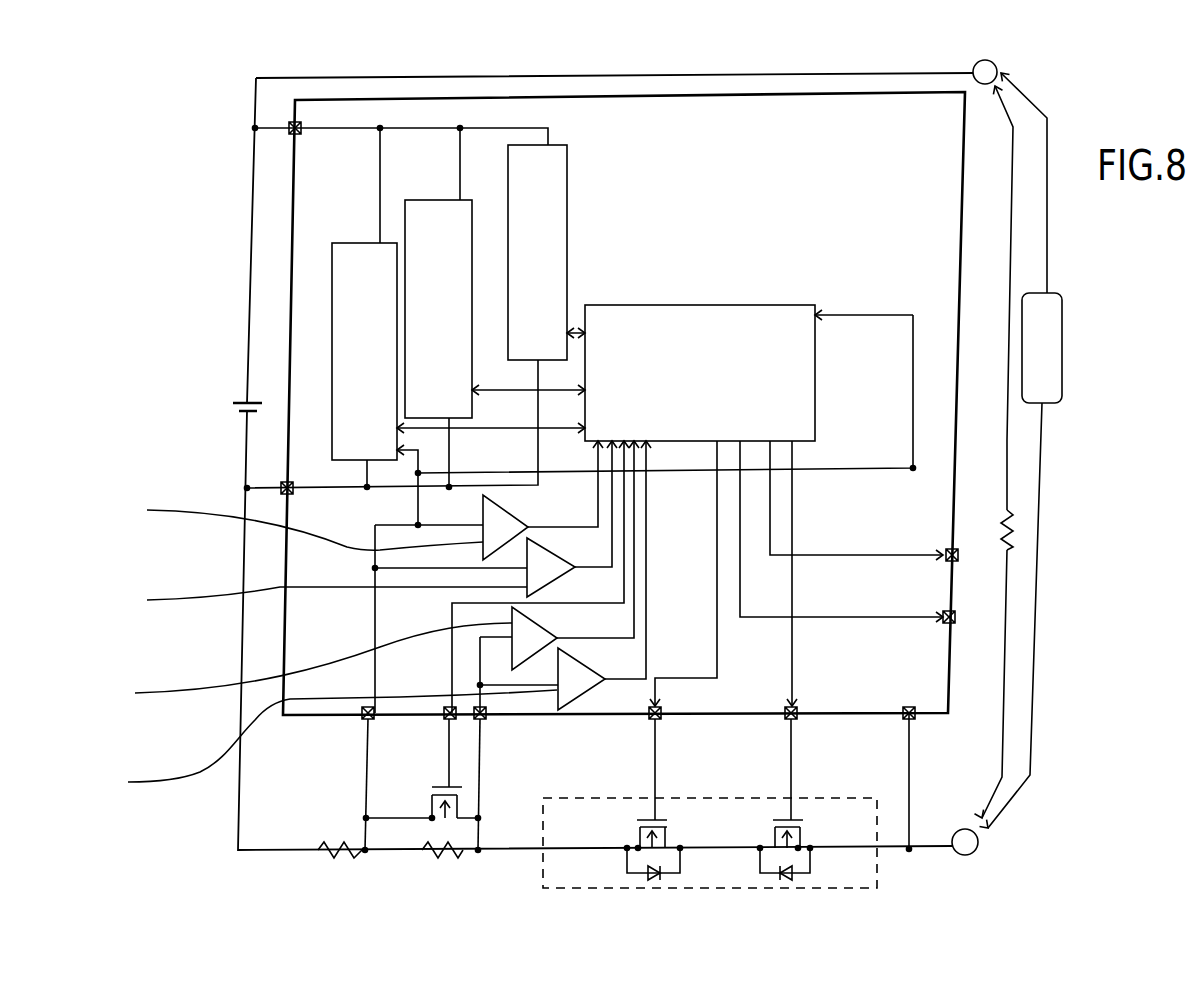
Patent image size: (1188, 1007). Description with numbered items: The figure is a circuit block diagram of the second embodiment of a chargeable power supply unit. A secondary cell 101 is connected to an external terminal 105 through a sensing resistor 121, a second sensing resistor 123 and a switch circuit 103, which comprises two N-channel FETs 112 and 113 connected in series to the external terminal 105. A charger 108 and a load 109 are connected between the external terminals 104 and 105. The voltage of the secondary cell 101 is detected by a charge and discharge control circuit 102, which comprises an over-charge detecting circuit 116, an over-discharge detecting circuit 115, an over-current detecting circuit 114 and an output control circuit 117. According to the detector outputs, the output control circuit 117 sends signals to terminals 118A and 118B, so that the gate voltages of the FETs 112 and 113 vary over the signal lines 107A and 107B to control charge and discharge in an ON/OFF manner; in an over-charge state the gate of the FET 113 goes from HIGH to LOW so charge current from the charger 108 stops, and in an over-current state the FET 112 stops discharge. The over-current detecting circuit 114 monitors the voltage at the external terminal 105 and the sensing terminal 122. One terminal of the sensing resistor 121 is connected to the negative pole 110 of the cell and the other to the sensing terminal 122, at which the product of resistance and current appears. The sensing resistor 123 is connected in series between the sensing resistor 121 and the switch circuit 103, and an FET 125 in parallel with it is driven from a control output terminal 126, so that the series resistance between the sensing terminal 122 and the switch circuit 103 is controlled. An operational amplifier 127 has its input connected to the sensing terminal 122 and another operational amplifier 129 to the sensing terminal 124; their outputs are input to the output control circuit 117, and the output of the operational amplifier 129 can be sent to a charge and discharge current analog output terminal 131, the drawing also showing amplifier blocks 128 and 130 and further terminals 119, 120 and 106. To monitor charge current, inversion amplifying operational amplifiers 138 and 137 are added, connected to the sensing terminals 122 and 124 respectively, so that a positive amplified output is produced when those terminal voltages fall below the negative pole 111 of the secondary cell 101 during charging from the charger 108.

The secondary cell 101 is at (232, 410).
The charge and discharge control circuit 102 is at (282, 343).
The switch circuit 103 is at (880, 862).
The external terminal 104 is at (1000, 56).
The external terminal 105 is at (978, 852).
The terminal 106 is at (913, 735).
The signal line 107A is at (653, 790).
The signal line 107B is at (789, 790).
The charger 108 is at (1018, 368).
The load 109 is at (1002, 508).
The negative pole 110 is at (247, 127).
The negative pole 111 is at (243, 488).
The FET 112 is at (632, 828).
The FET 113 is at (805, 828).
The over-current detecting circuit 114 is at (350, 243).
The over-discharge detecting circuit 115 is at (435, 200).
The over-charge detecting circuit 116 is at (558, 145).
The output control circuit 117 is at (641, 305).
The terminal 118A is at (660, 725).
The terminal 118B is at (796, 725).
The output terminal 119 is at (665, 700).
The output terminal 120 is at (800, 698).
The sensing resistor 121 is at (335, 862).
The sensing terminal 122 is at (352, 732).
The sensing resistor 123 is at (440, 862).
The sensing terminal 124 is at (490, 725).
The FET 125 is at (462, 805).
The control output terminal 126 is at (455, 730).
The operational amplifier 127 is at (274, 540).
The amplifier 128 is at (568, 524).
The operational amplifier 129 is at (285, 691).
The amplifier 130 is at (621, 676).
The charge and discharge current analog output terminal 131 is at (938, 608).
The operational amplifier 137 is at (294, 628).
The operational amplifier 138 is at (940, 545).